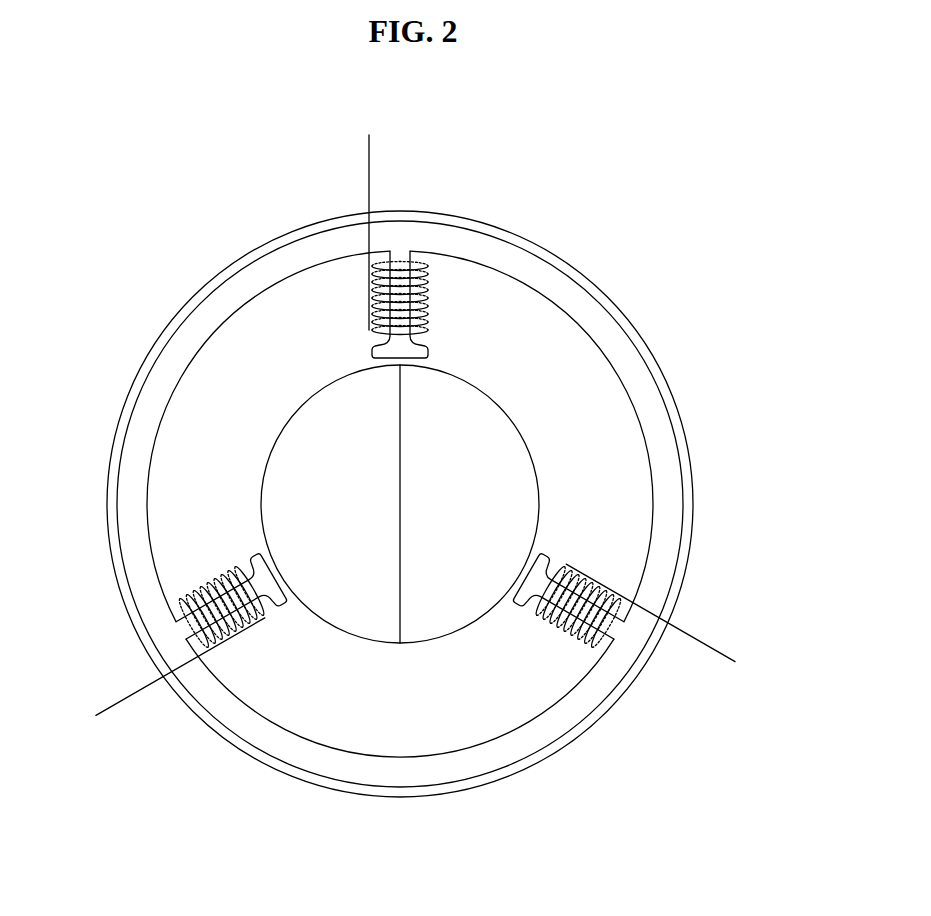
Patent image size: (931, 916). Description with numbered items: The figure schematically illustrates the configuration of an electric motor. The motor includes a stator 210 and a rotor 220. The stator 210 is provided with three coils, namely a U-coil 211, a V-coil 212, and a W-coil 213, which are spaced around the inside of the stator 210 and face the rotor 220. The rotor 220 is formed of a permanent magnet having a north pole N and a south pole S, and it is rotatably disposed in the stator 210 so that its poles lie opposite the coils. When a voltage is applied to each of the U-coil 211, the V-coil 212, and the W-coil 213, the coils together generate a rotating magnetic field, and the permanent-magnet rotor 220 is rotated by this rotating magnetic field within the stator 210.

The stator 210 is at (692, 460).
The U-coil 211 is at (430, 287).
The V-coil 212 is at (568, 637).
The W-coil 213 is at (200, 587).
The rotor 220 is at (502, 407).